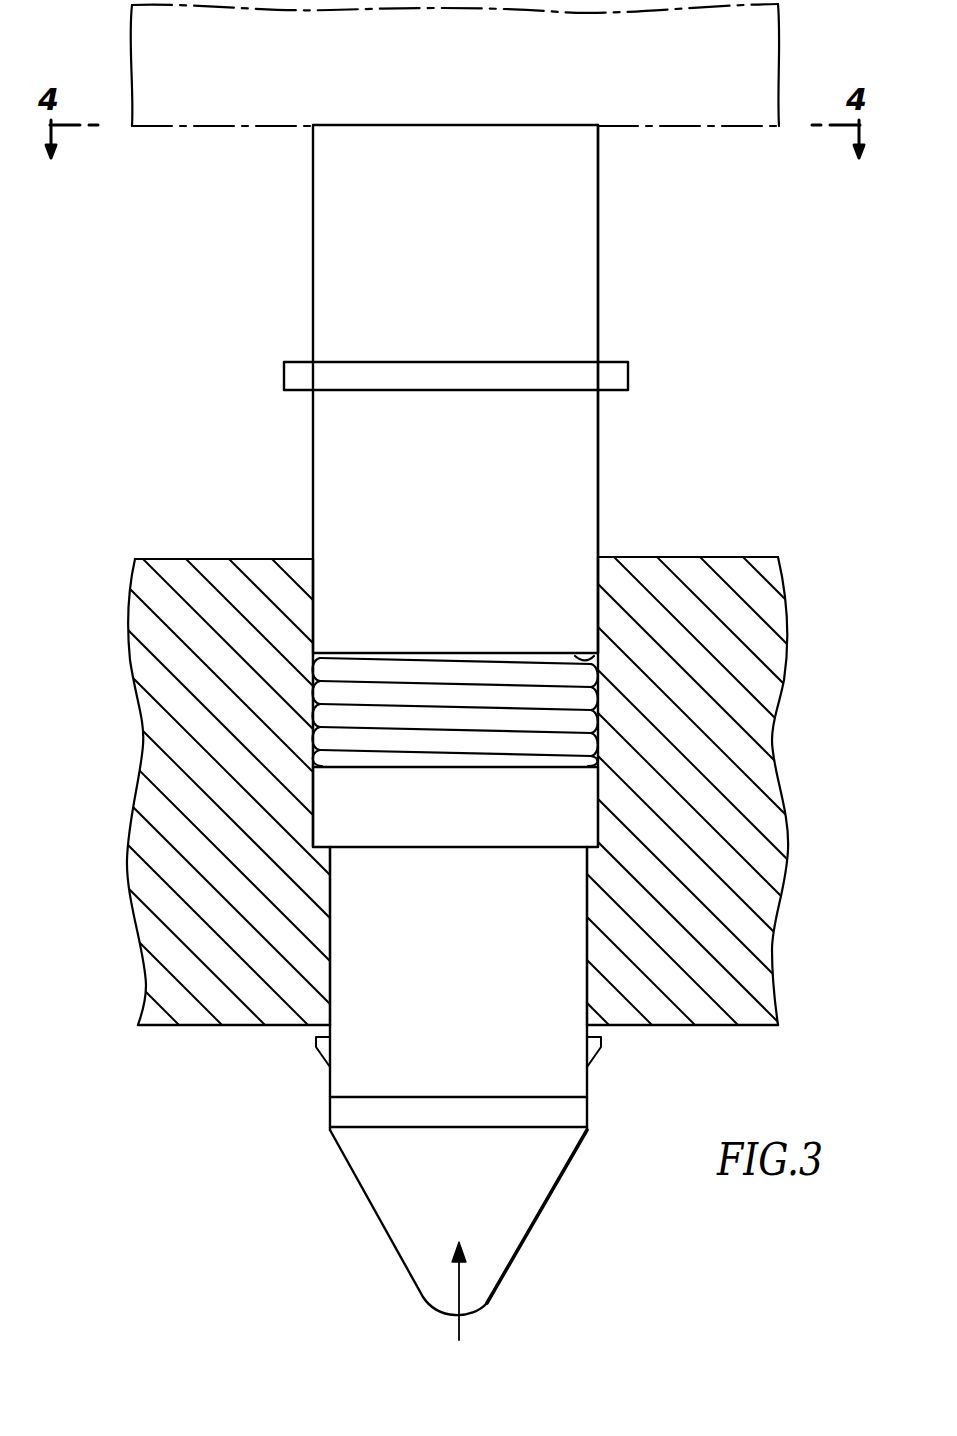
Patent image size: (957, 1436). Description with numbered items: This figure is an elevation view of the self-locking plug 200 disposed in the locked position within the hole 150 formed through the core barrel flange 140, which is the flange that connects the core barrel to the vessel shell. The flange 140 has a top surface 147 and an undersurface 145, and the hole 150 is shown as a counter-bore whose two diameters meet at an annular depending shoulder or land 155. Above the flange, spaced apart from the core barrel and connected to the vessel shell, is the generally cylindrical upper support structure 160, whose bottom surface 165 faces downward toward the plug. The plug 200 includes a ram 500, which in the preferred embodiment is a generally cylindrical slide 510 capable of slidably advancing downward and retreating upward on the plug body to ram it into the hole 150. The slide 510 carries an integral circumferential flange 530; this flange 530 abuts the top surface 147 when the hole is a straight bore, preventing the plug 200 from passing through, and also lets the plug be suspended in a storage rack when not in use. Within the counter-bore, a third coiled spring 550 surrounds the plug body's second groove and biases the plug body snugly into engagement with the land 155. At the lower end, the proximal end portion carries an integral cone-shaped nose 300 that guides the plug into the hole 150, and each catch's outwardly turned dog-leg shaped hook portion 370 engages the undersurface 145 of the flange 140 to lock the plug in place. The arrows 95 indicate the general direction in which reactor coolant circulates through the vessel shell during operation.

The arrows 95 is at (456, 1288).
The core barrel flange 140 is at (132, 652).
The undersurface 145 is at (212, 1026).
The top surface 147 is at (165, 558).
The access port or hole 150 is at (312, 580).
The annular depending shoulder or land 155 is at (322, 840).
The upper support structure 160 is at (147, 70).
The bottom surface 165 is at (230, 127).
The self-locking plug 200 is at (212, 283).
The cone-shaped nose 300 is at (513, 1230).
The hook portion 370 is at (319, 1055).
The ram 500 is at (600, 200).
The slide 510 is at (600, 296).
The flange 530 is at (287, 376).
The third coiled spring 550 is at (318, 690).